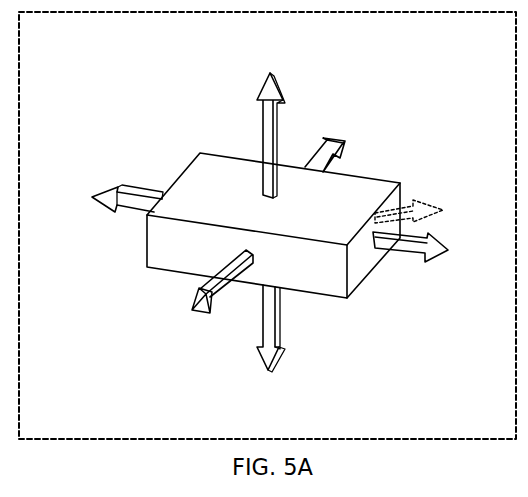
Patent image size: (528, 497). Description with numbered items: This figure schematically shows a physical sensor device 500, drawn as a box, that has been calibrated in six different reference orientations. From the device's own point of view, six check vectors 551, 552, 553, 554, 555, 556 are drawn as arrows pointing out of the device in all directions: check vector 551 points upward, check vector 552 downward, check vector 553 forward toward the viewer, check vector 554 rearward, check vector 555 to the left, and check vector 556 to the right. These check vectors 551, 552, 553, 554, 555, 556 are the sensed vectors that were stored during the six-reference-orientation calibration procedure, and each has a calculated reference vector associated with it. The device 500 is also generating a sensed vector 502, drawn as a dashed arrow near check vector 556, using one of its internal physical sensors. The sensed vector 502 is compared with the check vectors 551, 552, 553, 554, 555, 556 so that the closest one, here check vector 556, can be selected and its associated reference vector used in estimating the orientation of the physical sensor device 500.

The physical sensor device 500 is at (220, 157).
The sensed vector 502 is at (437, 208).
The check vector 551 is at (284, 90).
The check vector 552 is at (283, 352).
The check vector 553 is at (198, 293).
The check vector 554 is at (341, 150).
The check vector 555 is at (95, 199).
The check vector 556 is at (447, 242).